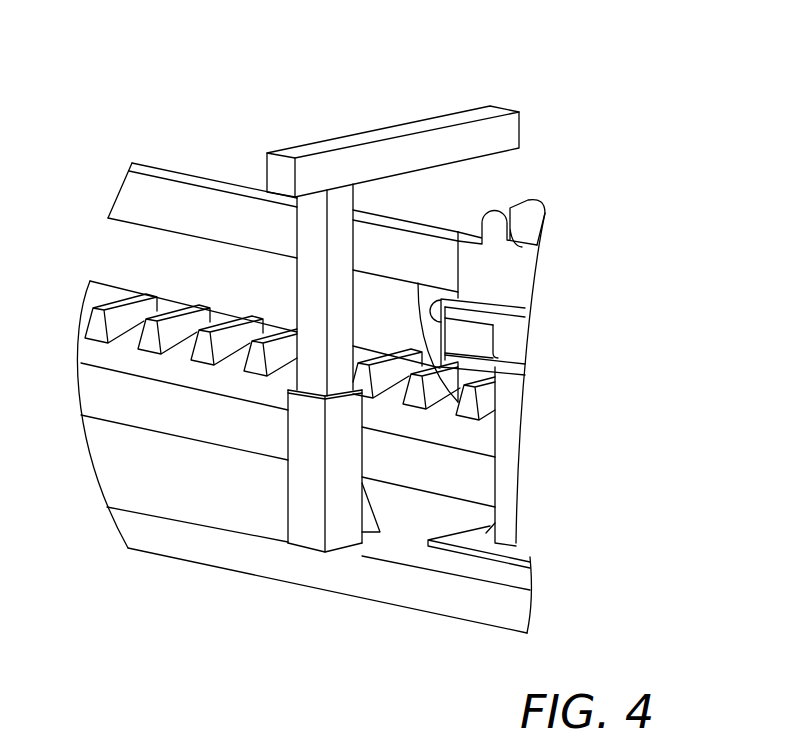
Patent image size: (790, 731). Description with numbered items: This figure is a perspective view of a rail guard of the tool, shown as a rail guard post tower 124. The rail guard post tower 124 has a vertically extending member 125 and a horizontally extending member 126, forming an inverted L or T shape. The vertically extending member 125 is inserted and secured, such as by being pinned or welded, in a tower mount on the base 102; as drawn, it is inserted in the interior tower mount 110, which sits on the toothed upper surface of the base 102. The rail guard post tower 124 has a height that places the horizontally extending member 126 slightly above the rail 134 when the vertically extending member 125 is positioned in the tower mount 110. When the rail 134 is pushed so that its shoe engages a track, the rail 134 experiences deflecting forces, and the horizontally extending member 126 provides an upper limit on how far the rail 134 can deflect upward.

The base 102 is at (400, 548).
The interior tower mount 110 is at (300, 473).
The rail guard post tower 124 is at (389, 86).
The vertically extending member 125 is at (312, 308).
The horizontally extending member 126 is at (489, 117).
The rail 134 is at (434, 225).